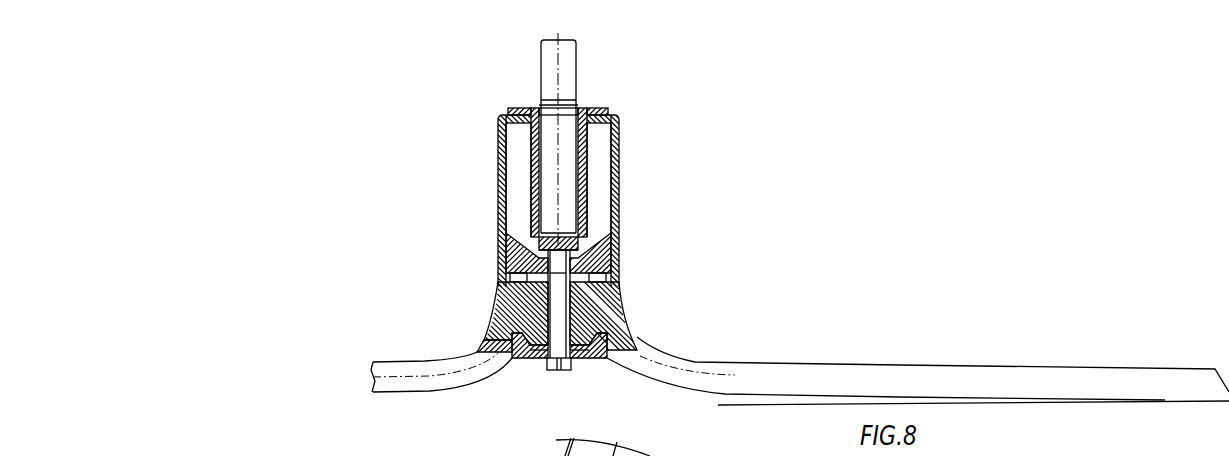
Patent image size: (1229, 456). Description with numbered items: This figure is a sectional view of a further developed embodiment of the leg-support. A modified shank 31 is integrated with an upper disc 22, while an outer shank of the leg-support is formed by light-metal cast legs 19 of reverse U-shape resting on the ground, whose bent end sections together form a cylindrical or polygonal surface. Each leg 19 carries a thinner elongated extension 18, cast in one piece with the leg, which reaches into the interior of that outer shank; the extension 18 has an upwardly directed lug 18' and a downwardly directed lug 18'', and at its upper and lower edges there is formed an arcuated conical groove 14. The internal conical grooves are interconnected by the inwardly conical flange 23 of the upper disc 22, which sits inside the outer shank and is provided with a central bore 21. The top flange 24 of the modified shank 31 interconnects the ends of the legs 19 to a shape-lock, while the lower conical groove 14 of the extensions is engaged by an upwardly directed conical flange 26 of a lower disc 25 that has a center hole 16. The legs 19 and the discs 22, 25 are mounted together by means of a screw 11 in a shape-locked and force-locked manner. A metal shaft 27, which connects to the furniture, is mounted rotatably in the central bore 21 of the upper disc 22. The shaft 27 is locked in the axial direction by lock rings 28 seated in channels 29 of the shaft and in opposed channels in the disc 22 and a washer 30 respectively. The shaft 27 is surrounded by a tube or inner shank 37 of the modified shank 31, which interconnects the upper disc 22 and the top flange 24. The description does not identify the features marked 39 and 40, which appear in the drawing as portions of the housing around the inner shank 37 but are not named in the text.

The screw 11 is at (551, 372).
The conical groove 14 is at (502, 230).
The center hole 16 is at (563, 372).
The extension 18 is at (626, 288).
The upwardly directed lug 18' is at (627, 297).
The downwardly directed lug 18'' is at (646, 300).
The leg 19 is at (965, 385).
The central bore 21 is at (552, 278).
The upper disc 22 is at (615, 252).
The conical flange 23 is at (594, 283).
The top flange 24 is at (506, 116).
The disc 25 is at (586, 357).
The conical flange 26 is at (615, 362).
The metal shaft 27 is at (573, 50).
The lock ring 28 is at (538, 108).
The channel 29 is at (555, 103).
The washer 30 is at (594, 110).
The modified shank 31 is at (522, 188).
The tube or inner shank 37 is at (530, 152).
The chamber 39 is at (502, 135).
The top wall 40 is at (613, 117).